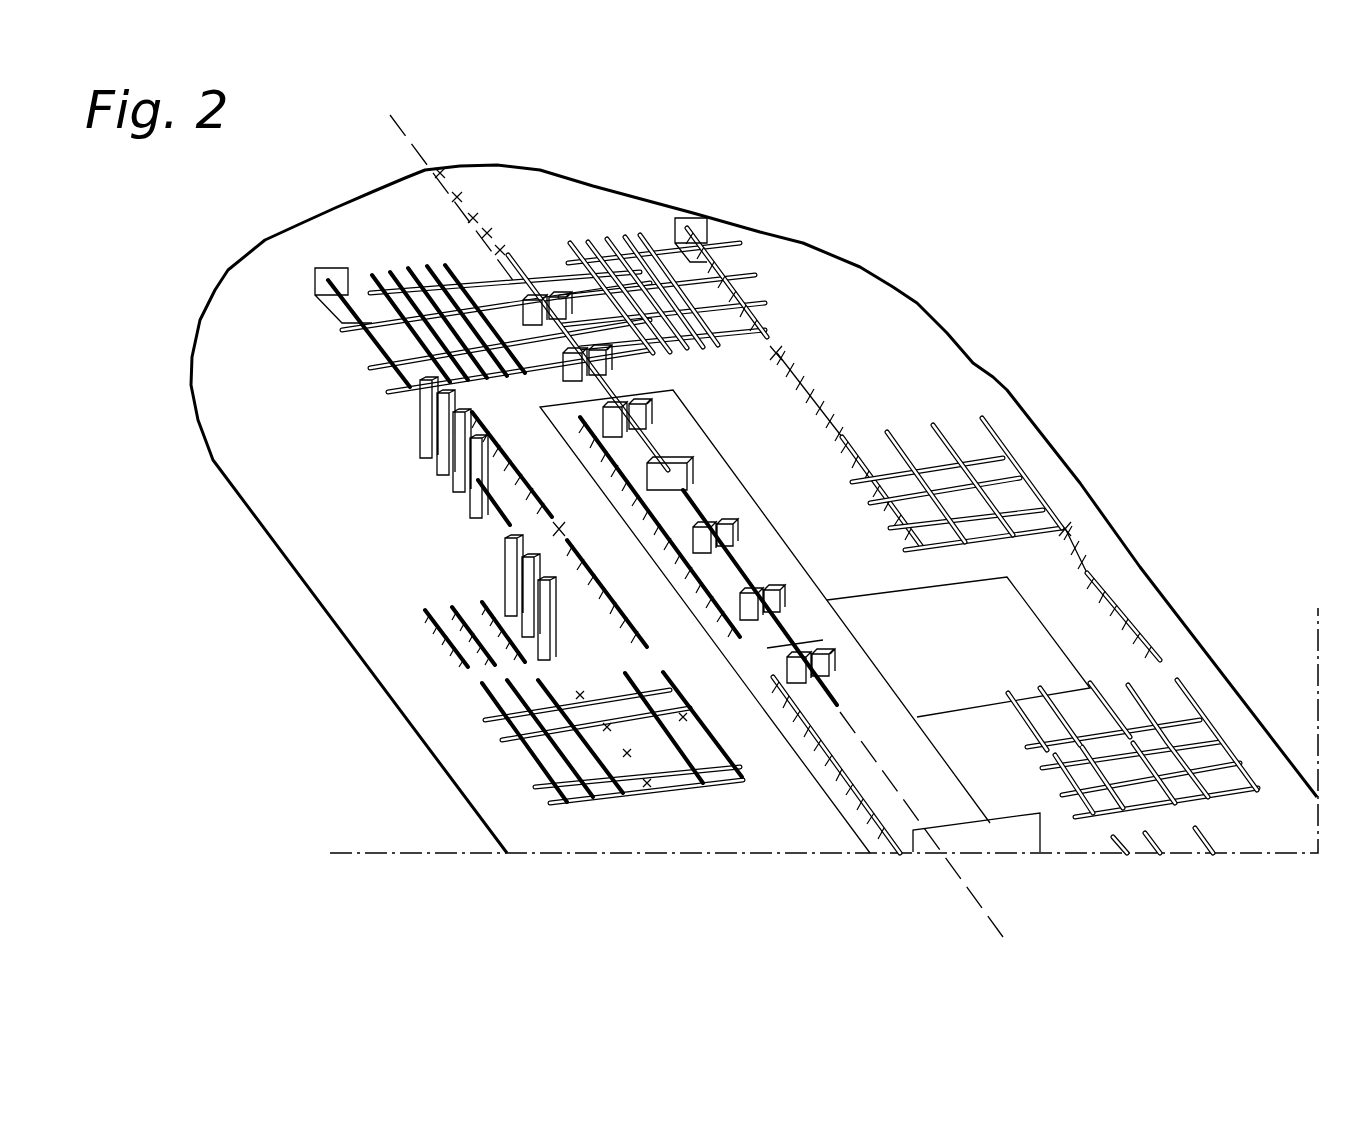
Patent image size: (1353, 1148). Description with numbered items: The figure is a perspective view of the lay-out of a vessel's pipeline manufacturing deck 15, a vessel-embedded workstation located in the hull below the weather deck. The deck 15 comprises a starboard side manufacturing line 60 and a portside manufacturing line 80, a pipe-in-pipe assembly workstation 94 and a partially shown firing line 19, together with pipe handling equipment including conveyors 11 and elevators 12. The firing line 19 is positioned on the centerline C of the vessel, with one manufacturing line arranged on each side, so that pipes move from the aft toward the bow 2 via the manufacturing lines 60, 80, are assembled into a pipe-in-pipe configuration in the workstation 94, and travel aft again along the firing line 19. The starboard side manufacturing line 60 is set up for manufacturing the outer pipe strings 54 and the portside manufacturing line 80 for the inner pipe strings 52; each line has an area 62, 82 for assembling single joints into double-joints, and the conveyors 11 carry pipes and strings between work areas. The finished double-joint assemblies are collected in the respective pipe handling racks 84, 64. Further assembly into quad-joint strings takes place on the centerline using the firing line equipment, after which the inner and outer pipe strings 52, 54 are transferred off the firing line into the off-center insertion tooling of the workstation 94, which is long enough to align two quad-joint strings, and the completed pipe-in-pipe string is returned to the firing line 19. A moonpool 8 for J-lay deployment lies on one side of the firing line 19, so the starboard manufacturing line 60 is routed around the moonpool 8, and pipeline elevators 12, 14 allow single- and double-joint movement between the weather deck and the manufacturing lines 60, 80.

The bow 2 is at (380, 178).
The centerline C is at (398, 118).
The moonpool 8 is at (945, 666).
The conveyors 11 is at (808, 378).
The elevators 12 is at (513, 597).
The pipeline elevator 14 is at (425, 442).
The pipeline manufacturing deck 15 is at (1142, 258).
The firing line 19 is at (843, 720).
The inner pipe string 52 is at (733, 562).
The outer pipe string 54 is at (518, 262).
The starboard side manufacturing line 60 is at (933, 417).
The double-joint assembly area 62 is at (1153, 713).
The pipe handling rack 64 is at (622, 247).
The portside manufacturing line 80 is at (400, 548).
The double-joint assembly area 82 is at (623, 793).
The pipe handling rack 84 is at (383, 273).
The pipe-in-pipe assembly workstation 94 is at (763, 642).